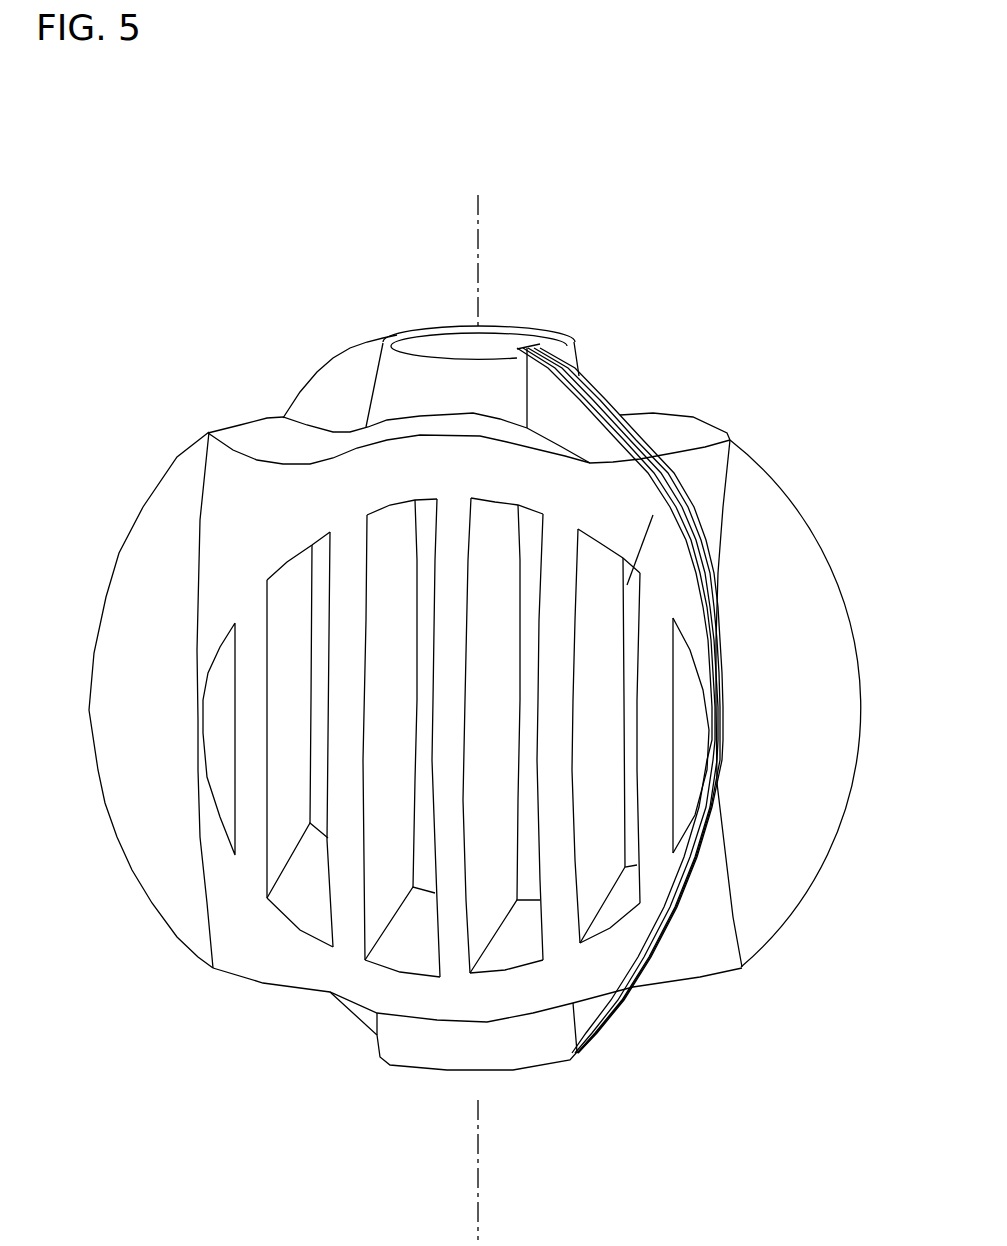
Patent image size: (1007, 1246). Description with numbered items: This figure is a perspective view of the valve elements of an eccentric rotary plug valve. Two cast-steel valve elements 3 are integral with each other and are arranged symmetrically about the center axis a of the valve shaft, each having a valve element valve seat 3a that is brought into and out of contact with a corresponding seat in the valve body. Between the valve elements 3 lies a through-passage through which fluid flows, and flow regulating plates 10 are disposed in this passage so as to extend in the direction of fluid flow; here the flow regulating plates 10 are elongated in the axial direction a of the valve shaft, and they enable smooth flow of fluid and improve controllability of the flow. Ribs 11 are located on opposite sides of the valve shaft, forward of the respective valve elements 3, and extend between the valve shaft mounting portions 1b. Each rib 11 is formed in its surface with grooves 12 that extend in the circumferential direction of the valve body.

The valve shaft mounting portion 1b is at (400, 400).
The valve element 3 is at (143, 593).
The valve element valve seat 3a is at (145, 507).
The flow regulating plate 10 is at (448, 608).
The rib 11 is at (303, 390).
The groove 12 is at (323, 370).
The center axis a is at (480, 270).